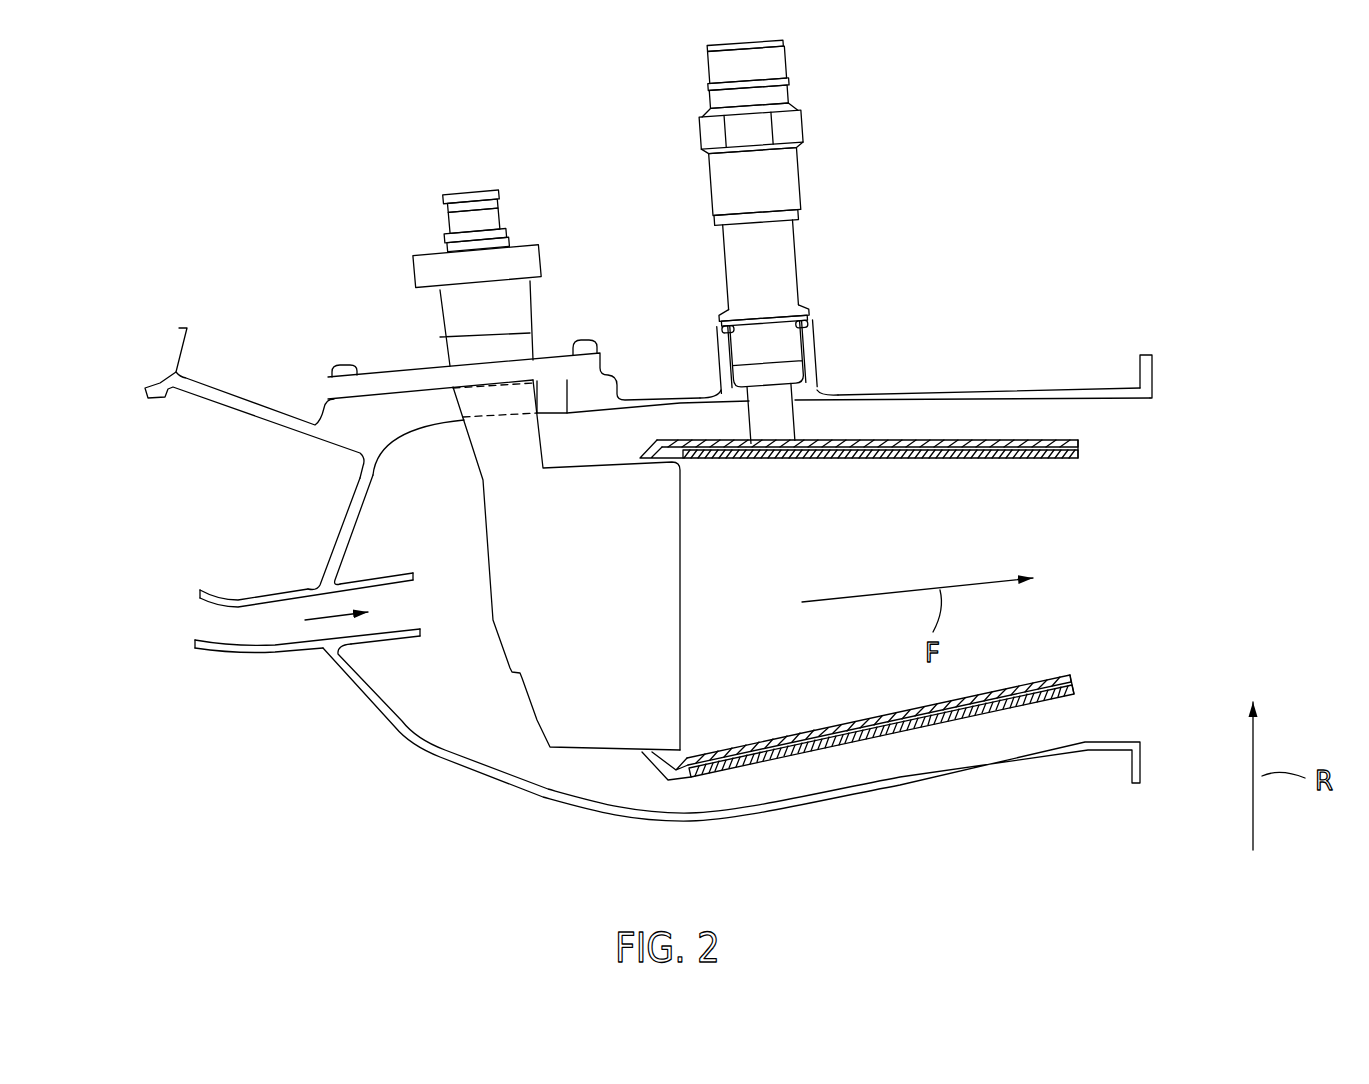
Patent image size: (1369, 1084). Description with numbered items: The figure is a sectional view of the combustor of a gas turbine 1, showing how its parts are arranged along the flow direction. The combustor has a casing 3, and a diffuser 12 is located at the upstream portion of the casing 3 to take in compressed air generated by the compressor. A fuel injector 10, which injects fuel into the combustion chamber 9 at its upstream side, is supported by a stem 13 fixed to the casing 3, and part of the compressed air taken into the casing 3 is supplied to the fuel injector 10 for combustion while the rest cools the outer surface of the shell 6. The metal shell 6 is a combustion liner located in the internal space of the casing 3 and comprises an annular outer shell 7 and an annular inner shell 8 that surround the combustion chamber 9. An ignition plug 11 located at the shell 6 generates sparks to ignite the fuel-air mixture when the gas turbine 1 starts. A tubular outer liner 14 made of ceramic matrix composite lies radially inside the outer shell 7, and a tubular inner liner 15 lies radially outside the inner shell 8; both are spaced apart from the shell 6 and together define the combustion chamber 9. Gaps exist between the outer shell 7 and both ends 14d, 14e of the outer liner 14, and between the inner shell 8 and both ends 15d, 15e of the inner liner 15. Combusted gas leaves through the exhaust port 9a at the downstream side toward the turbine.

The gas turbine 1 is at (1060, 375).
The casing 3 is at (973, 388).
The shell 6 is at (910, 729).
The outer shell 7 is at (880, 440).
The inner shell 8 is at (840, 746).
The combustion chamber 9 is at (880, 569).
The exhaust port 9a is at (1060, 597).
The fuel injector 10 is at (610, 718).
The ignition plug 11 is at (790, 252).
The diffuser 12 is at (262, 597).
The stem 13 is at (541, 440).
The outer liner 14 is at (757, 459).
The end of outer liner 14d is at (683, 460).
The end of outer liner 14e is at (1078, 458).
The inner liner 15 is at (772, 740).
The end of inner liner 15d is at (684, 758).
The downstream end of inner liner 15e is at (1073, 672).